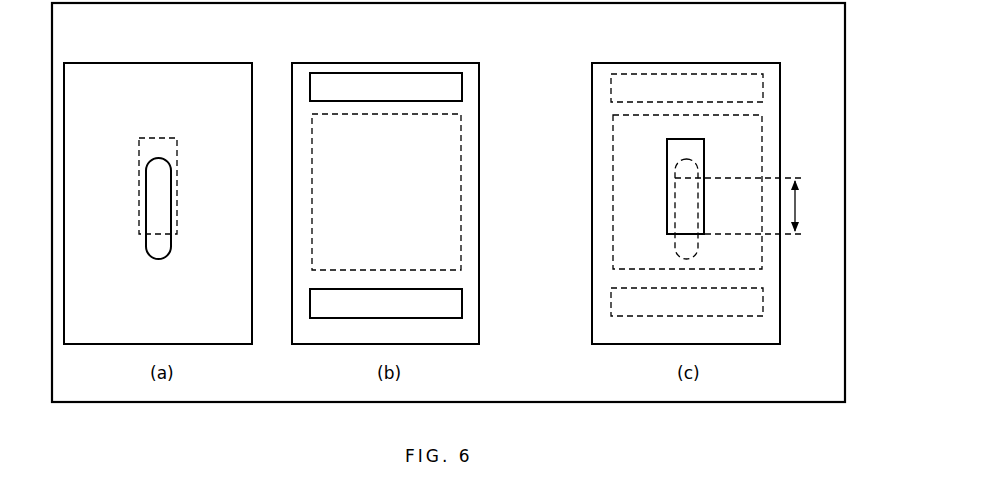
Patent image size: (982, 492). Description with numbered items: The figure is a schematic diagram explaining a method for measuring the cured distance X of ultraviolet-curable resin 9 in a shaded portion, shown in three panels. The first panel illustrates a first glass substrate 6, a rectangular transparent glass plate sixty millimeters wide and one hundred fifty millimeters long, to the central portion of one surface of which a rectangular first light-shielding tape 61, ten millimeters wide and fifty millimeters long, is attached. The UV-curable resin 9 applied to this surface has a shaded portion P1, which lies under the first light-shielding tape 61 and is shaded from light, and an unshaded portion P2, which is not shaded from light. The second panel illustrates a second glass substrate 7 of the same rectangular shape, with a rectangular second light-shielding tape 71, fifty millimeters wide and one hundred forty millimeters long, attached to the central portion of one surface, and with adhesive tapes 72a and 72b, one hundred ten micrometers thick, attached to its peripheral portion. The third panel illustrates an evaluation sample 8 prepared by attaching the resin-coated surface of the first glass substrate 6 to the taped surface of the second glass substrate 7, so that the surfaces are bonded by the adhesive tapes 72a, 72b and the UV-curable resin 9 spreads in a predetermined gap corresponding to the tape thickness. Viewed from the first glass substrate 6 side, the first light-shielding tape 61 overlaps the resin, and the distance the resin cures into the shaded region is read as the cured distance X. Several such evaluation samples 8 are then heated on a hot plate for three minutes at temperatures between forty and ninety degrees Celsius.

The first glass substrate 6 is at (186, 76).
The first light-shielding tape 61 is at (137, 150).
The UV-curable resin 9 is at (145, 249).
The shaded portion P1 is at (162, 193).
The unshaded portion P2 is at (162, 244).
The second glass substrate 7 is at (470, 76).
The second light-shielding tape 71 is at (465, 143).
The adhesive tape 72a is at (455, 89).
The adhesive tape 72b is at (455, 299).
The evaluation sample 8 is at (781, 55).
The cured distance X is at (744, 206).